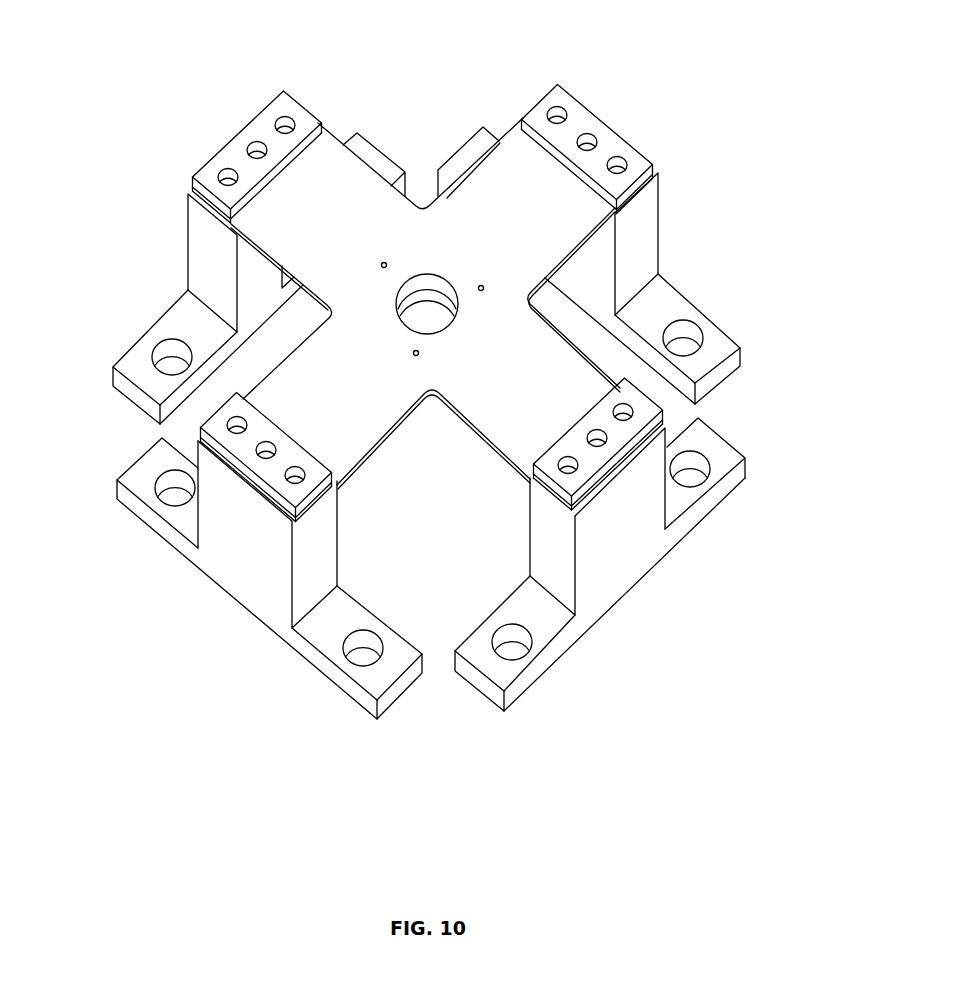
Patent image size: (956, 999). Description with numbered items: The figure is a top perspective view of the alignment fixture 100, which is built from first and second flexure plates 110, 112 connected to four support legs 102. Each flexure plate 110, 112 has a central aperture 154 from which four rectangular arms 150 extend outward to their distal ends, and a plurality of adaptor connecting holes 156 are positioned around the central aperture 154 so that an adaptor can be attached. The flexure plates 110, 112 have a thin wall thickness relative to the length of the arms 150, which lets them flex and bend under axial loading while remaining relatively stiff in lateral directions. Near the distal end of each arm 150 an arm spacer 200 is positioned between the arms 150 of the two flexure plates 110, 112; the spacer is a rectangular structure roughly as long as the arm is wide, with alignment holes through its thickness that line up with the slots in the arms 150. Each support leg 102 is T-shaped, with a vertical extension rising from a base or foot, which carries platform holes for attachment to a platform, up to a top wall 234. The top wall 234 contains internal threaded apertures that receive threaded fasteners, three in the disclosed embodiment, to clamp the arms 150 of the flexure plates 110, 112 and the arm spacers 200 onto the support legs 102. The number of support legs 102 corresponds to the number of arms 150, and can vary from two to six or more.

The alignment fixture 100 is at (167, 140).
The support leg 102 is at (660, 233).
The first flexure plate 110 is at (474, 363).
The second flexure plate 112 is at (454, 413).
The arm 150 is at (308, 180).
The central aperture 154 is at (411, 316).
The adaptor connecting hole 156 is at (386, 262).
The arm spacer 200 is at (190, 194).
The top wall 234 is at (744, 455).